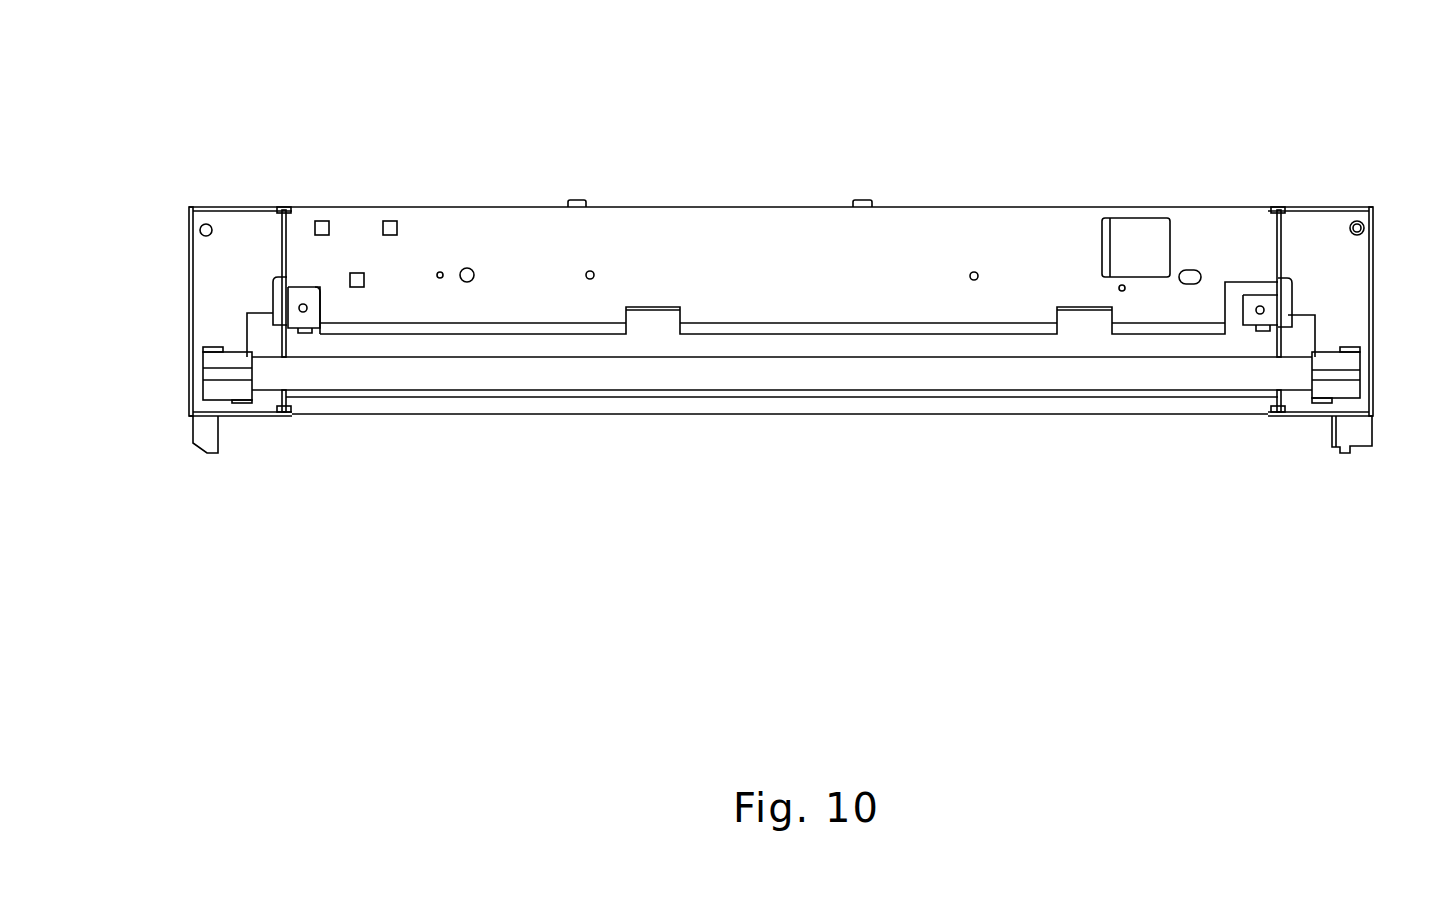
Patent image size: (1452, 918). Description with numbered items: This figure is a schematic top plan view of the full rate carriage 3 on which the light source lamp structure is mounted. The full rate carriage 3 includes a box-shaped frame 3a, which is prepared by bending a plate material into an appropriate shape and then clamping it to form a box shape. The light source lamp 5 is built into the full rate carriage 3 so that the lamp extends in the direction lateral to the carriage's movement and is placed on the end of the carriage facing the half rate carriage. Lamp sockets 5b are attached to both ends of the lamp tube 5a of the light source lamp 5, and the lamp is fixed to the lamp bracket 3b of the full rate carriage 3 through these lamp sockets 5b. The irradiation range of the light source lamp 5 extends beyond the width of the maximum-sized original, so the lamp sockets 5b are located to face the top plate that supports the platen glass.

The full rate carriage 3 is at (785, 223).
The box-shaped frame 3a is at (428, 228).
The lamp bracket 3b is at (217, 347).
The light source lamp 5 is at (952, 377).
The lamp tube 5a is at (645, 377).
The lamp socket 5b is at (205, 380).